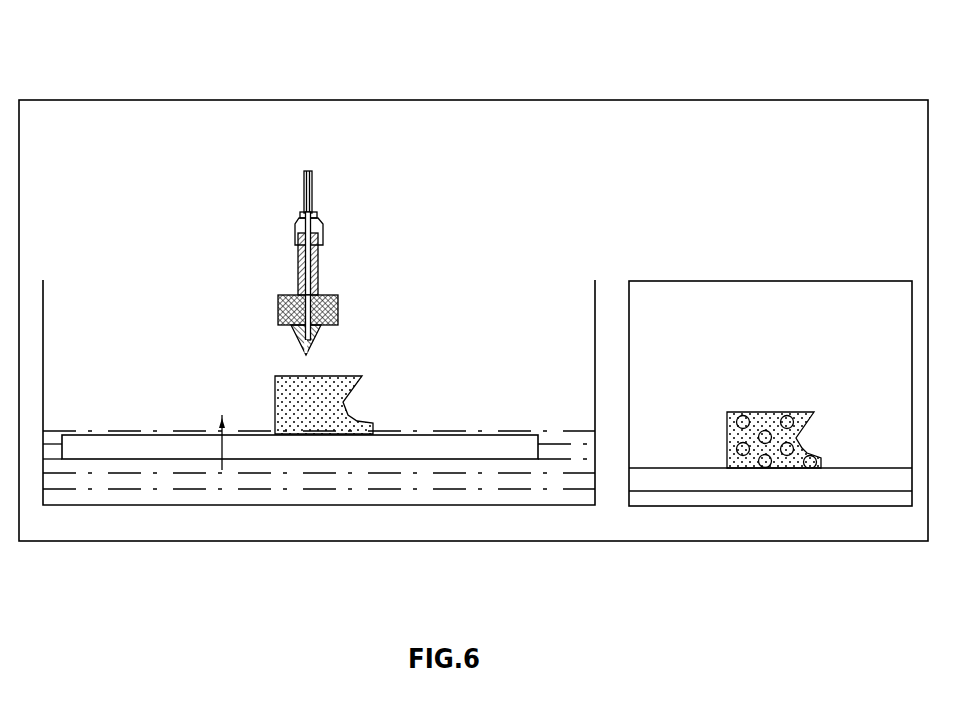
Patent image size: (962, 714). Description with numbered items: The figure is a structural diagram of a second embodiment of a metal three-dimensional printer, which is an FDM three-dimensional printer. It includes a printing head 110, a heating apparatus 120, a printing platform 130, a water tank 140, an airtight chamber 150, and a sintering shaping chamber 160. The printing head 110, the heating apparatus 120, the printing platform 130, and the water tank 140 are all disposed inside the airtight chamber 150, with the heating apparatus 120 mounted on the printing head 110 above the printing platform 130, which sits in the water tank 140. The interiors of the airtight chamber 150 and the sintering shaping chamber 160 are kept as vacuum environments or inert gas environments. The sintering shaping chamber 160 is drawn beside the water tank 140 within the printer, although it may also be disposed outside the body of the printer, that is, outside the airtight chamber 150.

The printing head 110 is at (317, 261).
The heating apparatus 120 is at (339, 308).
The printing platform 130 is at (422, 445).
The water tank 140 is at (318, 505).
The airtight chamber 150 is at (473, 100).
The sintering shaping chamber 160 is at (772, 282).